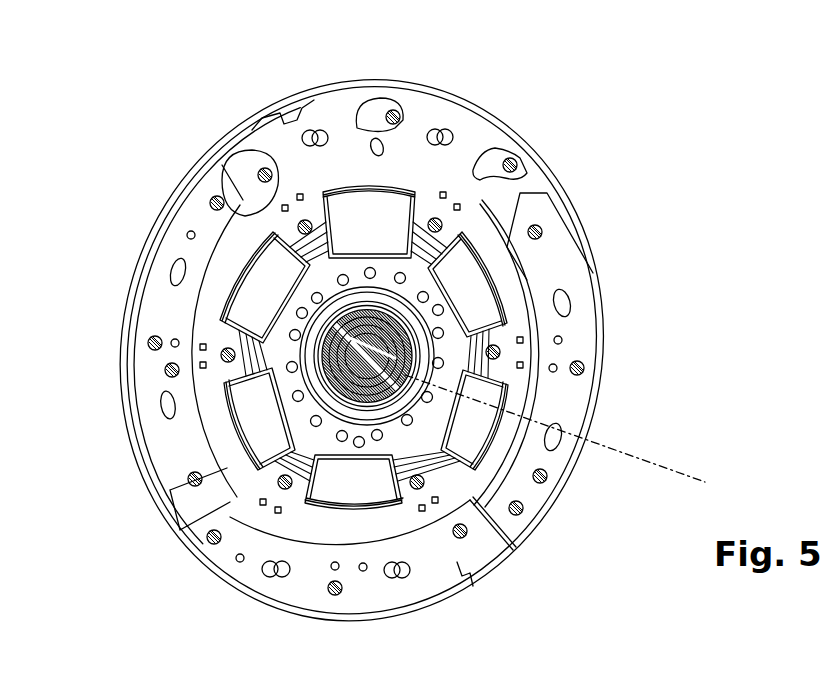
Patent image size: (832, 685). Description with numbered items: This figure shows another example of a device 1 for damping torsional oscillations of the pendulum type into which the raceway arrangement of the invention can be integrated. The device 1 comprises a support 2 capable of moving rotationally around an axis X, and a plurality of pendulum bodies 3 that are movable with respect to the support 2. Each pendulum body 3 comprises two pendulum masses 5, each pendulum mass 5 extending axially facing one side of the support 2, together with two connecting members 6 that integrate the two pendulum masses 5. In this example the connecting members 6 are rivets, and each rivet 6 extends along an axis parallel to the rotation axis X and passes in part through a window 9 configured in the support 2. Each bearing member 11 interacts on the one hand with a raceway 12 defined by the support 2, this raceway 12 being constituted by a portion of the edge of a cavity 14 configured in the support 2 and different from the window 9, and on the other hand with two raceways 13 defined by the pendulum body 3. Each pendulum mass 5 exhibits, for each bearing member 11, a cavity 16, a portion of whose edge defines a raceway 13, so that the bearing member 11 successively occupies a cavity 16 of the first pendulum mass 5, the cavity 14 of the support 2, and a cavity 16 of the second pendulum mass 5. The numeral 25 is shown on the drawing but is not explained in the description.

The device for damping torsional oscillations 1 is at (297, 95).
The support 2 is at (236, 150).
The pendulum body 3 is at (50, 235).
The pendulum mass 5 is at (137, 263).
The connecting member 6 is at (212, 200).
The window 9 is at (490, 162).
The bearing member 11 is at (468, 120).
The raceway 12 is at (430, 125).
The raceway 13 is at (577, 297).
The cavity 14 is at (372, 95).
The cavity 16 is at (577, 305).
The retaining hook 25 is at (222, 156).
The axis X is at (567, 428).